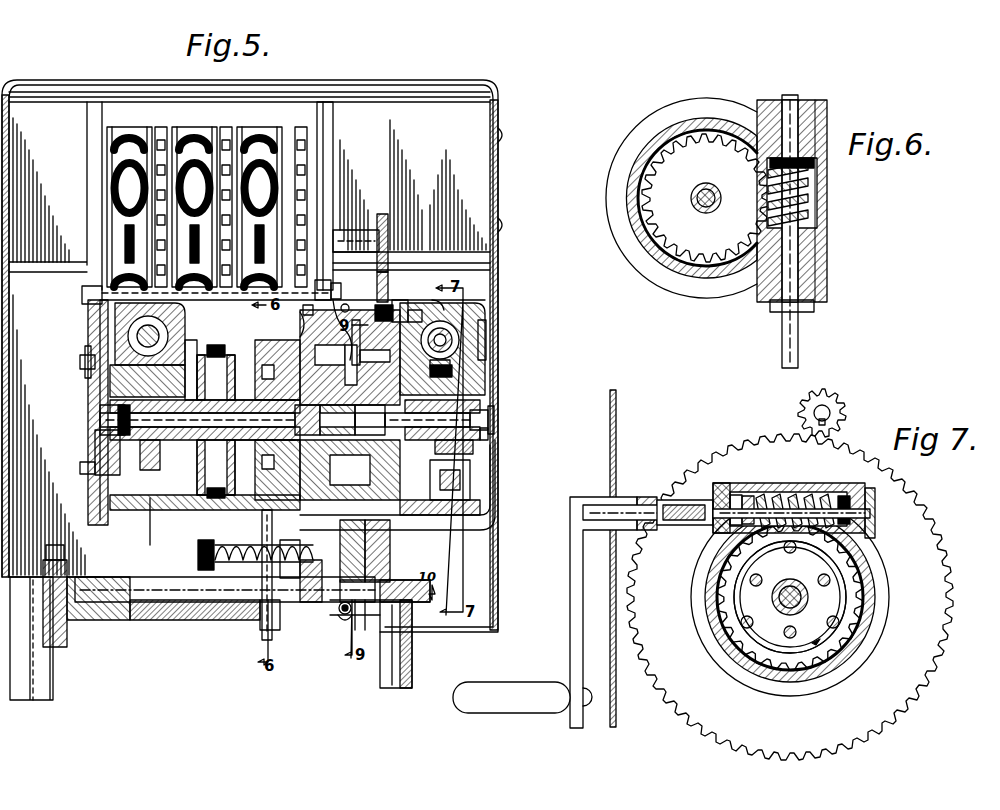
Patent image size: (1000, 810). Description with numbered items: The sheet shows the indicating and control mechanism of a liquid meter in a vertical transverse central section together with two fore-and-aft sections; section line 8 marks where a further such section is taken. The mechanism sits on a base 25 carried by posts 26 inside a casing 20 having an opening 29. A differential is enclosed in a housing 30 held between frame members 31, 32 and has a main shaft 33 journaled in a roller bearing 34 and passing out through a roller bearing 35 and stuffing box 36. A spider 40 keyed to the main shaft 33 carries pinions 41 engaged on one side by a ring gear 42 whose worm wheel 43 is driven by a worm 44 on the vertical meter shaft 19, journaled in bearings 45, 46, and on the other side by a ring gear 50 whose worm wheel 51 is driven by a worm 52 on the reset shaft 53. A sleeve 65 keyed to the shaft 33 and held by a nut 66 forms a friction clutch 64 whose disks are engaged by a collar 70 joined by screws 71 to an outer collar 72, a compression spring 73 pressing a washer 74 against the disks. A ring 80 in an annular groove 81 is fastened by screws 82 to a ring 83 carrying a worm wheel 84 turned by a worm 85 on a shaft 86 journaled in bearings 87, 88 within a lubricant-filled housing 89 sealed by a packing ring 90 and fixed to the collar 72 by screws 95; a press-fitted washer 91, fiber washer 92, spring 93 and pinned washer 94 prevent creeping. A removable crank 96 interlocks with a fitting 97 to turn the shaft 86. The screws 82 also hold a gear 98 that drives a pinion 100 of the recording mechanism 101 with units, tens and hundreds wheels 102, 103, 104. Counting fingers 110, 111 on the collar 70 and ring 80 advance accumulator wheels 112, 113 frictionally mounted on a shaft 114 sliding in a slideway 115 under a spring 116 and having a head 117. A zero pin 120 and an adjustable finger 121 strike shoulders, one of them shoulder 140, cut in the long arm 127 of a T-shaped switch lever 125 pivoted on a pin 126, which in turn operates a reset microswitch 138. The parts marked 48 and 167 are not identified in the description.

In FIG. 5, the spindle 8 is at (151, 521).
In FIG. 5, the vertical shaft 19 is at (274, 638).
In FIG. 6, the vertical shaft 19 is at (782, 350).
In FIG. 7, the casing 20 is at (616, 432).
In FIG. 5, the base 25 is at (200, 580).
In FIG. 5, the posts 26 is at (22, 670).
In FIG. 7, the opening 29 is at (630, 495).
In FIG. 5, the housing 30 is at (190, 512).
In FIG. 6, the housing 30 is at (710, 272).
In FIG. 5, the frame member 31 is at (90, 349).
In FIG. 5, the frame member 32 is at (344, 306).
In FIG. 5, the main shaft 33 is at (494, 420).
In FIG. 6, the main shaft 33 is at (690, 198).
In FIG. 7, the main shaft 33 is at (808, 597).
In FIG. 5, the roller bearing 34 is at (105, 450).
In FIG. 5, the roller bearing 35 is at (280, 476).
In FIG. 5, the stuffing box 36 is at (309, 415).
In FIG. 5, the spider 40 is at (215, 420).
In FIG. 5, the pinions 41 is at (225, 360).
In FIG. 5, the ring gear 42 is at (264, 420).
In FIG. 5, the worm wheel 43 is at (268, 362).
In FIG. 6, the worm wheel 43 is at (706, 198).
In FIG. 6, the worm 44 is at (812, 198).
In FIG. 6, the bearing 45 is at (805, 110).
In FIG. 6, the bearing 46 is at (814, 307).
In FIG. 6, the collar 48 is at (814, 168).
In FIG. 5, the ring gear 50 is at (165, 398).
In FIG. 5, the worm wheel 51 is at (80, 365).
In FIG. 5, the worm 52 is at (100, 303).
In FIG. 5, the reset shaft 53 is at (137, 336).
In FIG. 5, the friction clutch 64 is at (328, 291).
In FIG. 5, the sleeve 65 is at (480, 405).
In FIG. 7, the sleeve 65 is at (775, 620).
In FIG. 5, the nut 66 is at (488, 436).
In FIG. 5, the collar 70 is at (322, 330).
In FIG. 5, the horizontal screws 71 is at (360, 342).
In FIG. 5, the outer collar 72 is at (400, 385).
In FIG. 5, the helical compression spring 73 is at (427, 419).
In FIG. 5, the washer 74 is at (337, 420).
In FIG. 5, the ring 80 is at (398, 305).
In FIG. 5, the annular groove 81 is at (378, 309).
In FIG. 5, the screws 82 is at (412, 315).
In FIG. 5, the ring 83 is at (513, 480).
In FIG. 5, the worm wheel 84 is at (452, 360).
In FIG. 7, the worm wheel 84 is at (870, 580).
In FIG. 5, the worm 85 is at (458, 345).
In FIG. 7, the worm 85 is at (800, 495).
In FIG. 5, the worm shaft 86 is at (444, 328).
In FIG. 7, the worm shaft 86 is at (870, 513).
In FIG. 7, the bearing 87 is at (718, 485).
In FIG. 7, the bearing 88 is at (878, 535).
In FIG. 5, the housing 89 is at (482, 322).
In FIG. 7, the housing 89 is at (845, 495).
In FIG. 5, the sealing ring 90 is at (480, 507).
In FIG. 7, the washer 91 is at (772, 495).
In FIG. 7, the fiber washer 92 is at (750, 495).
In FIG. 7, the spring 93 is at (742, 495).
In FIG. 7, the washer 94 is at (758, 545).
In FIG. 5, the screws 95 is at (473, 450).
In FIG. 7, the screws 95 is at (745, 602).
In FIG. 7, the removable crank 96 is at (575, 620).
In FIG. 7, the fitting 97 is at (700, 500).
In FIG. 5, the gear 98 is at (380, 295).
In FIG. 7, the gear 98 is at (925, 658).
In FIG. 5, the pinion 100 is at (382, 214).
In FIG. 7, the pinion 100 is at (835, 398).
In FIG. 5, the recording mechanism 101 is at (330, 125).
In FIG. 5, the units wheel 102 is at (272, 135).
In FIG. 5, the tens wheel 103 is at (194, 135).
In FIG. 5, the hundreds wheel 104 is at (130, 135).
In FIG. 5, the counting finger 110 is at (385, 540).
In FIG. 5, the counting finger 111 is at (440, 522).
In FIG. 5, the accumulator wheel 112 is at (322, 585).
In FIG. 5, the accumulator wheel 113 is at (425, 600).
In FIG. 5, the shaft 114 is at (198, 558).
In FIG. 5, the slideway 115 is at (283, 562).
In FIG. 5, the spring 116 is at (240, 568).
In FIG. 5, the head 117 is at (385, 565).
In FIG. 5, the zero finger 120 is at (338, 608).
In FIG. 5, the adjustable finger 121 is at (368, 612).
In FIG. 5, the switch lever 125 is at (208, 622).
In FIG. 5, the vertical pin 126 is at (62, 648).
In FIG. 5, the long arm 127 is at (262, 625).
In FIG. 5, the reset microswitch 138 is at (112, 622).
In FIG. 5, the central shoulder 140 is at (342, 616).
In FIG. 5, the collar 167 is at (371, 420).